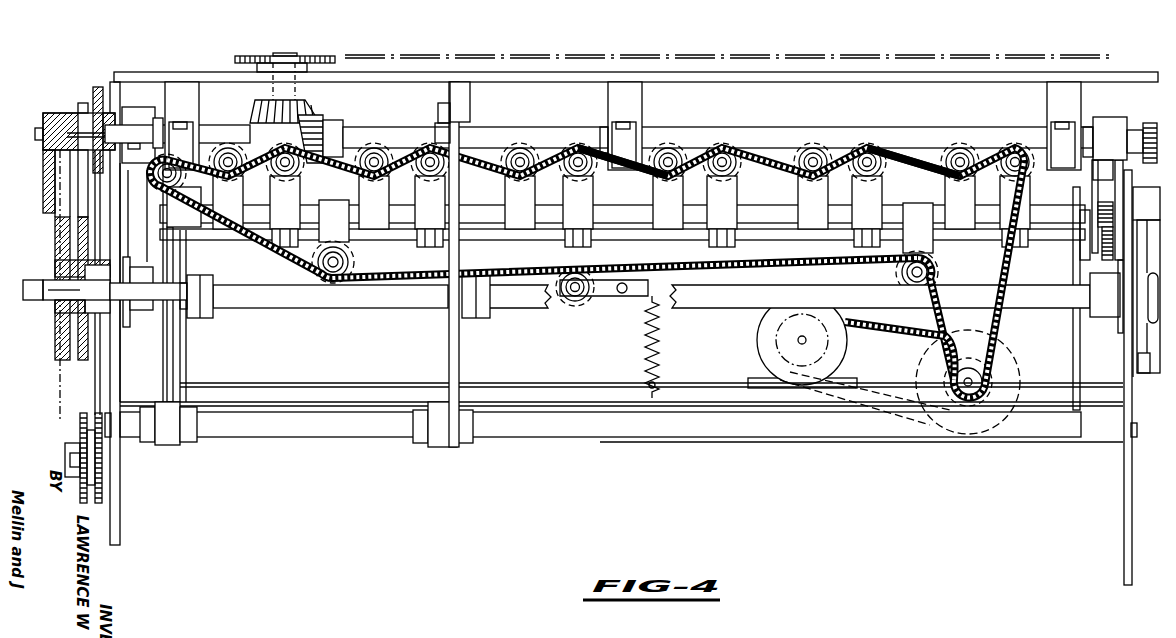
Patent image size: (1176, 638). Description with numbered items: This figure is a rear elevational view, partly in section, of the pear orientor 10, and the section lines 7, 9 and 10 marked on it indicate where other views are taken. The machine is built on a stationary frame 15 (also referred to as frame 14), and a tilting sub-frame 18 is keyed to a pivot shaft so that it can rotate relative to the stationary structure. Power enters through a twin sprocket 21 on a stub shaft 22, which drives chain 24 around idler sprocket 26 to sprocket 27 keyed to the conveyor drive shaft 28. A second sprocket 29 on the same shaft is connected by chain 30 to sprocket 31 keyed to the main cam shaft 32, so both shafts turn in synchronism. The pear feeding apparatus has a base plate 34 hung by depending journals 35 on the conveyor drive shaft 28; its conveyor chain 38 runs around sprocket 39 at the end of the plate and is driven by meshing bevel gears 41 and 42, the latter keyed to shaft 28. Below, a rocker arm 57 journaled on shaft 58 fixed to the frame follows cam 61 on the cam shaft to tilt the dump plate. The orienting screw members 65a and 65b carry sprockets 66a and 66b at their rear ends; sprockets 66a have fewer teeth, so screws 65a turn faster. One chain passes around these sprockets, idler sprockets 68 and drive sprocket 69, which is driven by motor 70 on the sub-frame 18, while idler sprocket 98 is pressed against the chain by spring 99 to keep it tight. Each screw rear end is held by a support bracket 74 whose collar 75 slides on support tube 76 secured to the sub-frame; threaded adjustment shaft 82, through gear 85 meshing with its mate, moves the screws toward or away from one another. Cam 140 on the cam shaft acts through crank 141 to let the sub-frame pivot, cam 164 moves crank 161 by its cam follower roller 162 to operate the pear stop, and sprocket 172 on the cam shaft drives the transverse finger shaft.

The section line 7 is at (10, 443).
The section line 9 is at (157, 66).
The pear orientor 10 is at (420, 70).
The frame 14 is at (130, 380).
The stationary frame 15 is at (1118, 492).
The sub-frame 18 is at (163, 382).
The twin sprocket 21 is at (80, 426).
The stub shaft 22 is at (70, 442).
The chain 24 is at (93, 399).
The idler sprocket 26 is at (104, 265).
The sprocket 27 is at (103, 96).
The conveyor drive shaft 28 is at (240, 130).
The sprocket 29 is at (78, 112).
The chain 30 is at (73, 180).
The sprocket 31 is at (80, 216).
The main cam shaft 32 is at (290, 304).
The base plate 34 is at (855, 98).
The depending journals 35 is at (641, 106).
The conveyor chain 38 is at (394, 59).
The sprocket 39 is at (336, 57).
The bevel gear 41 is at (310, 108).
The bevel gear 42 is at (330, 118).
The rocker arm 57 is at (460, 367).
The shaft 58 is at (598, 428).
The cam 61 is at (490, 306).
The screw members 65a is at (594, 170).
The screw members 65b is at (510, 180).
The sprockets 66a is at (576, 150).
The sprockets 66b is at (512, 152).
The idler sprockets 68 is at (354, 265).
The drive sprocket 69 is at (1000, 366).
The motor 70 is at (762, 338).
The support bracket 74 is at (290, 189).
The collar 75 is at (565, 216).
The support tube 76 is at (490, 224).
The adjustment shaft 82 is at (776, 258).
The gear 85 is at (1098, 210).
The idler sprocket 98 is at (575, 302).
The spring 99 is at (646, 344).
The cam 140 is at (1134, 350).
The crank 141 is at (1155, 188).
The crank 161 is at (182, 364).
The cam follower roller 162 is at (190, 297).
The cam 164 is at (208, 304).
The sprocket 172 is at (1152, 122).